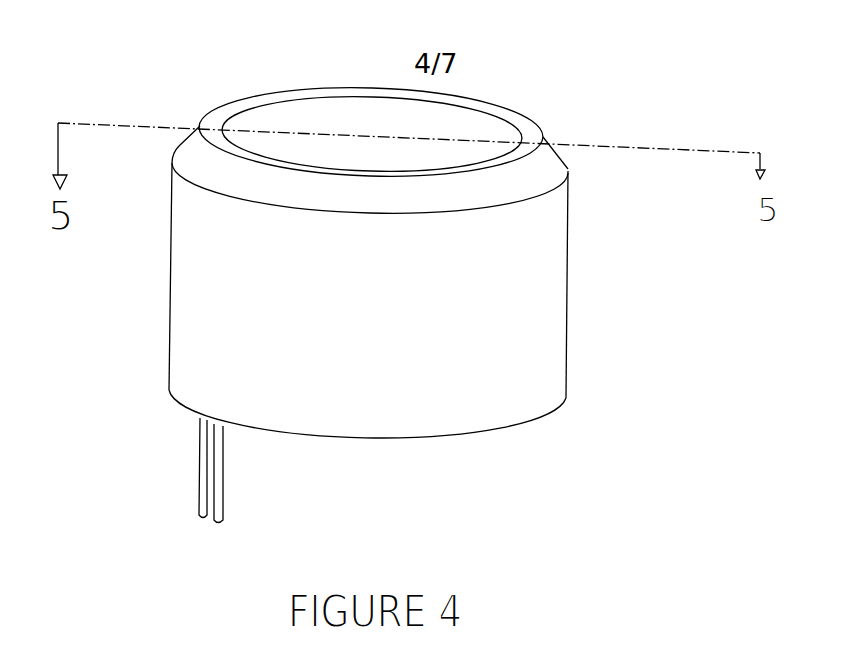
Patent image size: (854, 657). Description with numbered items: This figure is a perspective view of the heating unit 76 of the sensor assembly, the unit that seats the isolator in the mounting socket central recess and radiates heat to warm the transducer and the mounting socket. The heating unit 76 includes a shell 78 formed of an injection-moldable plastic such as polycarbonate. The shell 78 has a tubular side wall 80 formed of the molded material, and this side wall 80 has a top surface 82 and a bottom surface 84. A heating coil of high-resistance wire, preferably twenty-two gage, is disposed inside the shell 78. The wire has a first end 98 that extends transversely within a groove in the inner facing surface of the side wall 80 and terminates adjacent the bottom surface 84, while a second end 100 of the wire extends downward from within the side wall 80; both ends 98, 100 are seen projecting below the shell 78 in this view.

The heating unit 76 is at (185, 93).
The shell 78 is at (555, 132).
The tubular side wall 80 is at (567, 267).
The top surface 82 is at (232, 105).
The bottom surface 84 is at (423, 443).
The first end 98 is at (228, 463).
The second end 100 is at (190, 442).